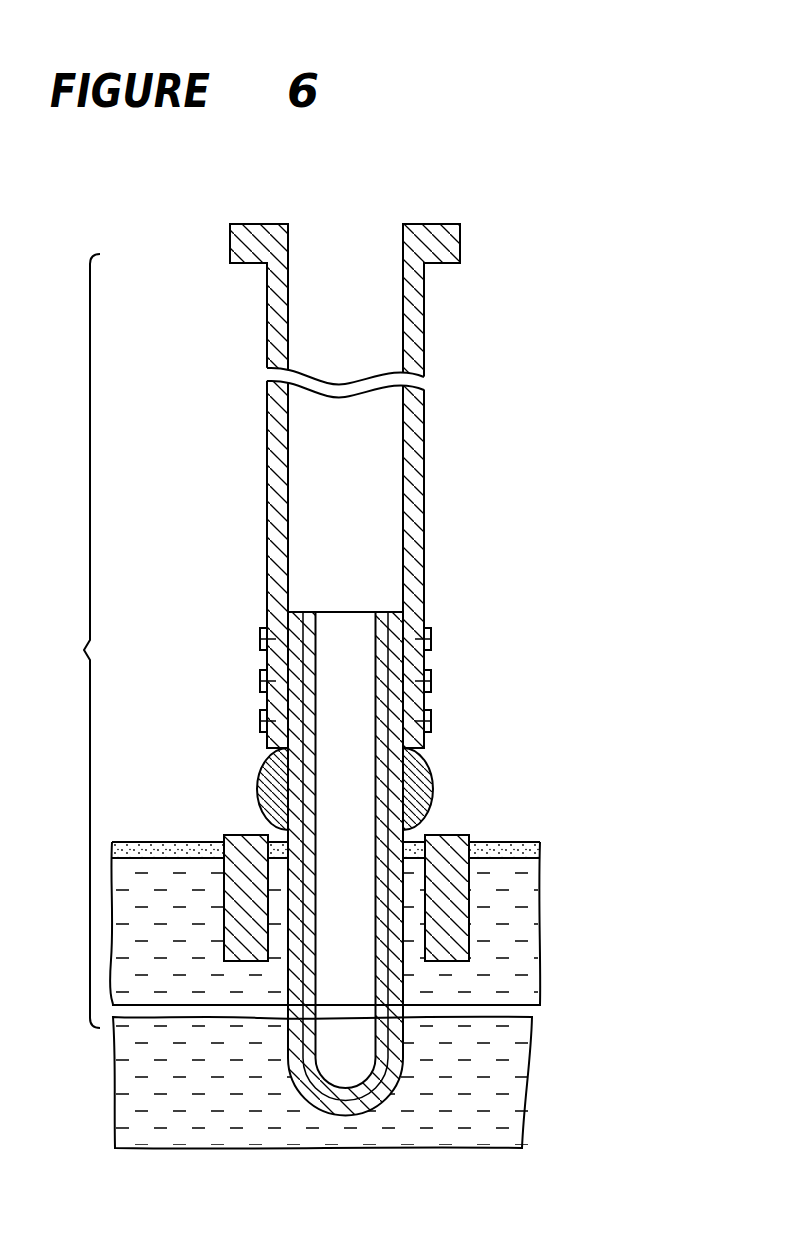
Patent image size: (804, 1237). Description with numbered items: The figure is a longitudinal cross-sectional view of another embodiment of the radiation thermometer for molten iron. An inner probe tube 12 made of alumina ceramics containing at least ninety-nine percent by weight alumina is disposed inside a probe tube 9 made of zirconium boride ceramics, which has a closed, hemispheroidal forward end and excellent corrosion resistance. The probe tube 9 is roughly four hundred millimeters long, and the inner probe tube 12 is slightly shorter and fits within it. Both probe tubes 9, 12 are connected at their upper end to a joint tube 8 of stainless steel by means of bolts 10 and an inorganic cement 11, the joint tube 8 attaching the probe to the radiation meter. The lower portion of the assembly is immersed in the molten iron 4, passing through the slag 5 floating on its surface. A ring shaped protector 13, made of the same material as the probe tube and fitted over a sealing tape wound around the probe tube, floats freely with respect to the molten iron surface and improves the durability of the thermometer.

The molten iron 4 is at (420, 1125).
The slag 5 is at (543, 848).
The joint tube 8 is at (426, 453).
The probe tube 9 is at (287, 1040).
The bolts 10 is at (428, 642).
The cement 11 is at (440, 770).
The inner probe tube 12 is at (327, 1090).
The ring shaped protector 13 is at (455, 836).